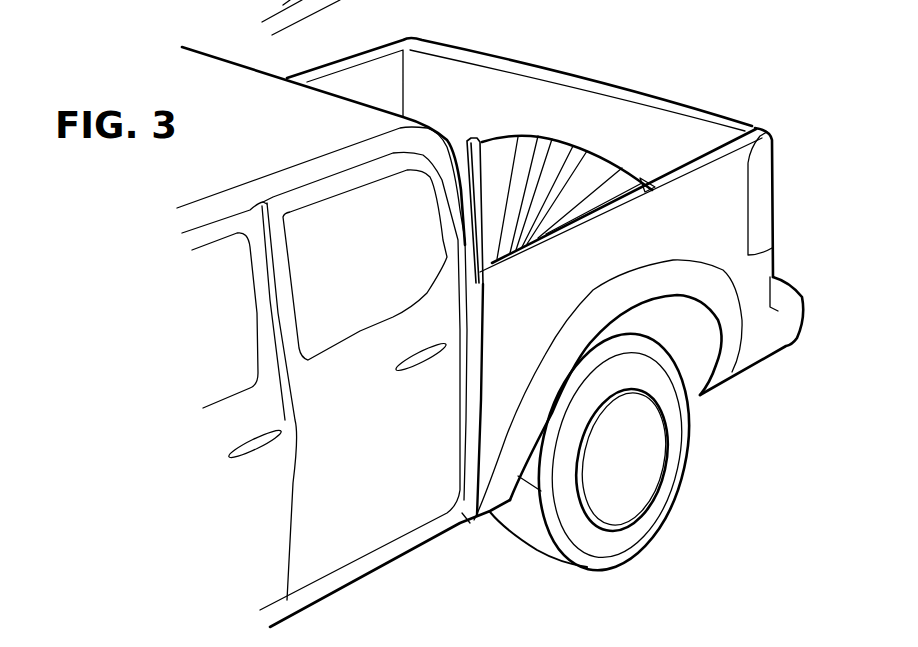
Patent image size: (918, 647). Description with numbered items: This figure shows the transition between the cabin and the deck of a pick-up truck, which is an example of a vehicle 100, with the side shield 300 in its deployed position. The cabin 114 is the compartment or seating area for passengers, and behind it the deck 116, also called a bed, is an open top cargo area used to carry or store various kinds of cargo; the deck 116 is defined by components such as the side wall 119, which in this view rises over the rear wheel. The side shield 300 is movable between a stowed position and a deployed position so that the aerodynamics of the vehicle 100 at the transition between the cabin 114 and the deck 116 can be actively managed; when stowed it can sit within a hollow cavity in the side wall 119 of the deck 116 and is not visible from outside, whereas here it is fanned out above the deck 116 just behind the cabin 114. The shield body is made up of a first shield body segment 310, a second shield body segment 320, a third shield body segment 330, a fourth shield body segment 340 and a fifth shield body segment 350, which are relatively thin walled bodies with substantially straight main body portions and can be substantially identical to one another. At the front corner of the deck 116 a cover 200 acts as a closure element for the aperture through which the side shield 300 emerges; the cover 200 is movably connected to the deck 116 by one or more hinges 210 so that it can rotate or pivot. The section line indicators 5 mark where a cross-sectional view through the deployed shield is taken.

The vehicle 100 is at (737, 448).
The cabin 114 is at (220, 47).
The deck 116 is at (362, 40).
The side wall 119 is at (593, 267).
The cover 200 is at (492, 131).
The hinge 210 is at (497, 262).
The side shield 300 is at (580, 142).
The first shield body segment 310 is at (507, 136).
The second shield body segment 320 is at (537, 137).
The third shield body segment 330 is at (573, 143).
The fourth shield body segment 340 is at (606, 167).
The fifth shield body segment 350 is at (628, 177).
The section line 5-5 view direction 5 is at (473, 125).